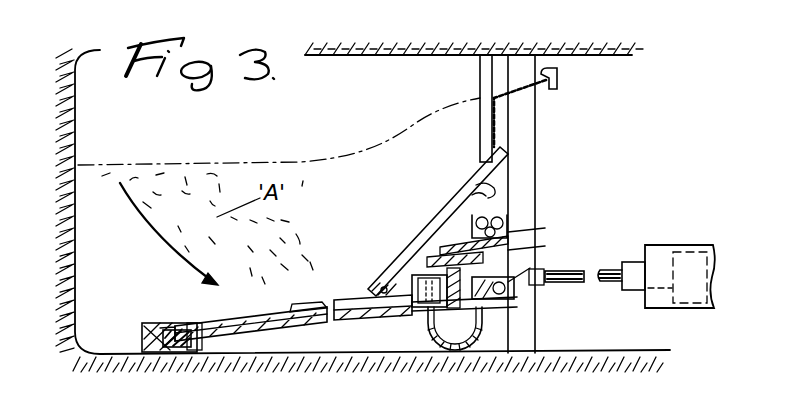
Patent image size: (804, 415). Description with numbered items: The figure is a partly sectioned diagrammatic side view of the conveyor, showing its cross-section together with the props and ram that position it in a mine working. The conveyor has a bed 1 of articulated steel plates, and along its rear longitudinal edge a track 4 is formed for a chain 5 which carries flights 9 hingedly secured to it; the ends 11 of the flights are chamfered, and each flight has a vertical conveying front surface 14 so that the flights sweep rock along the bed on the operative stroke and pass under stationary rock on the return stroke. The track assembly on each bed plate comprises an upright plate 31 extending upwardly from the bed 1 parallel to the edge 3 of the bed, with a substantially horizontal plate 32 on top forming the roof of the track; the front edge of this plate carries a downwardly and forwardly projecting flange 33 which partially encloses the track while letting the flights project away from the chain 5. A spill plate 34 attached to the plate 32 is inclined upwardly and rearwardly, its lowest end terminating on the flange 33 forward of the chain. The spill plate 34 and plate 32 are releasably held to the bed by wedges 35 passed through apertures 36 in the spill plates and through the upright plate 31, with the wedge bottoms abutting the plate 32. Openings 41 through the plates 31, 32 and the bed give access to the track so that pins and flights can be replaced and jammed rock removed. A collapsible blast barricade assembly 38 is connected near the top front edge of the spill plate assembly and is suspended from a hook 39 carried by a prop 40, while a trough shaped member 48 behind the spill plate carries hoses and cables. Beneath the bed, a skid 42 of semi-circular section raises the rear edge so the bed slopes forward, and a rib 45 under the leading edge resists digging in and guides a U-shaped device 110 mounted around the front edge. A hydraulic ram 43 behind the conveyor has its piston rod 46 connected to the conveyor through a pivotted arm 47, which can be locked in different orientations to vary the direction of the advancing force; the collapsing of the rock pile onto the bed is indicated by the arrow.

The bed 1 is at (290, 322).
The edge of the bed 3 is at (505, 300).
The track 4 is at (428, 314).
The chain 5 is at (438, 290).
The flights 9 is at (317, 300).
The ends of the flights 11 is at (200, 327).
The conveying front surface 14 is at (296, 309).
The plate 31 is at (520, 234).
The horizontal plate 32 is at (508, 280).
The flange 33 is at (384, 291).
The spill plate 34 is at (440, 260).
The wedges 35 is at (520, 253).
The apertures 36 is at (450, 247).
The collapsible blast barricade assembly 38 is at (477, 176).
The hooks 39 is at (557, 83).
The props 40 is at (526, 124).
The openings 41 is at (424, 258).
The skids 42 is at (452, 350).
The rams 43 is at (662, 270).
The rib 45 is at (178, 343).
The piston rods 46 is at (607, 283).
The pivotted arms 47 is at (532, 290).
The trough shaped members 48 is at (537, 206).
The devices 110 is at (143, 352).